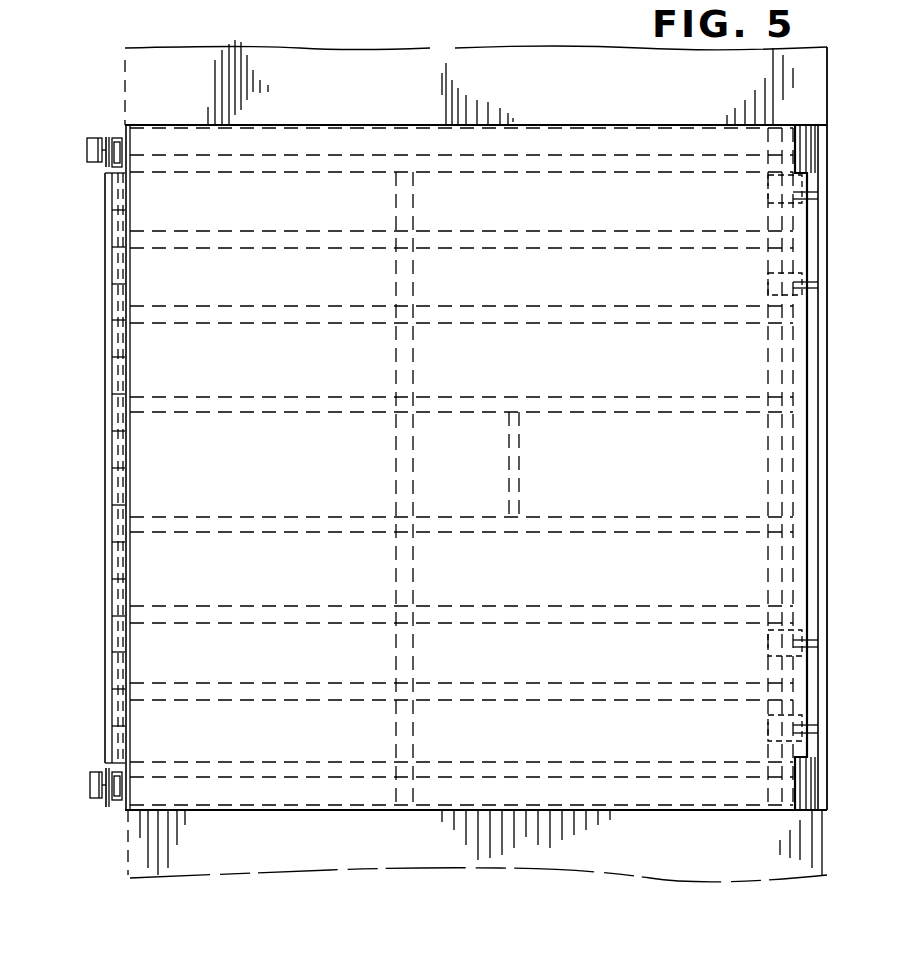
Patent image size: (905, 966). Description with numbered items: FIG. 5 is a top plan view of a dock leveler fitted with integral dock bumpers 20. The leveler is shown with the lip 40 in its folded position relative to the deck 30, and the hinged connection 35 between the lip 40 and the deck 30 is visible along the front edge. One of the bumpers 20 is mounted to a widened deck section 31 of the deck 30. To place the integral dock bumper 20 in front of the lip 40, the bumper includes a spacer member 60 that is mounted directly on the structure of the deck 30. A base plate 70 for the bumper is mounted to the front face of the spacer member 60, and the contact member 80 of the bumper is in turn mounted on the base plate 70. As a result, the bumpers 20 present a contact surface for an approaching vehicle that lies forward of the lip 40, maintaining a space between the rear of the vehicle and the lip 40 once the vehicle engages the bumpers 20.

The integral dock bumper 20 is at (93, 130).
The deck 30 is at (312, 222).
The widened deck section 31 is at (634, 128).
The hinged connection 35 is at (115, 222).
The lip 40 is at (105, 325).
The spacer member 60 is at (120, 137).
The base plate 70 is at (107, 137).
The contact member 80 is at (91, 163).